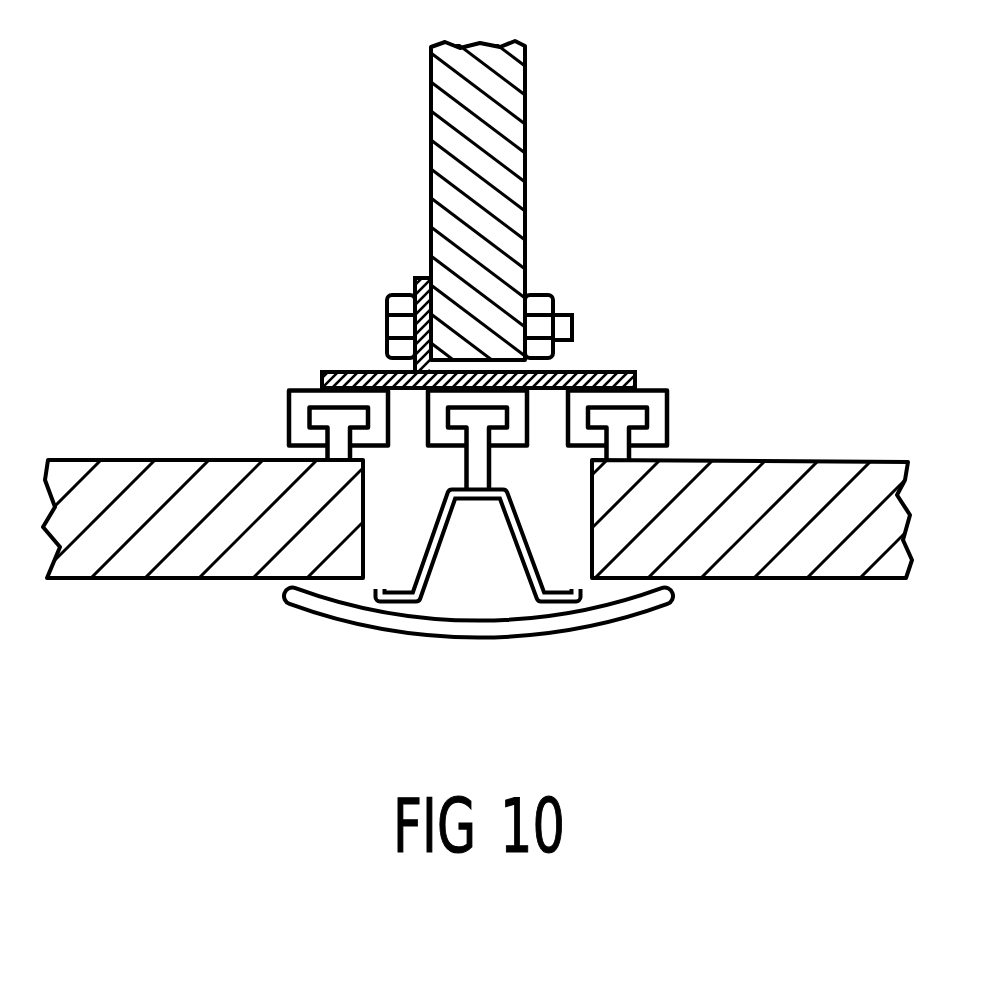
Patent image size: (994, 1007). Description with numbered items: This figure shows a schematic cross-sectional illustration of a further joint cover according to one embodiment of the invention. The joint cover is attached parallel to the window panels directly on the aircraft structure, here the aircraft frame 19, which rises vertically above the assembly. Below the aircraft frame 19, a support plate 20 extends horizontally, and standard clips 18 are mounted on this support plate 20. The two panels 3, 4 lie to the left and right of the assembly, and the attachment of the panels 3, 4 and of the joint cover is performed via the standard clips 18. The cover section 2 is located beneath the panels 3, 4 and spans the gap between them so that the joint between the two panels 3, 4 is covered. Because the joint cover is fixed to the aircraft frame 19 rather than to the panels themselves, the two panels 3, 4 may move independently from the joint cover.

The cover section 2 is at (482, 628).
The panel 3 is at (120, 475).
The panel 4 is at (837, 470).
The standard clips 18 is at (643, 415).
The aircraft frame 19 is at (510, 135).
The support plate 20 is at (351, 372).